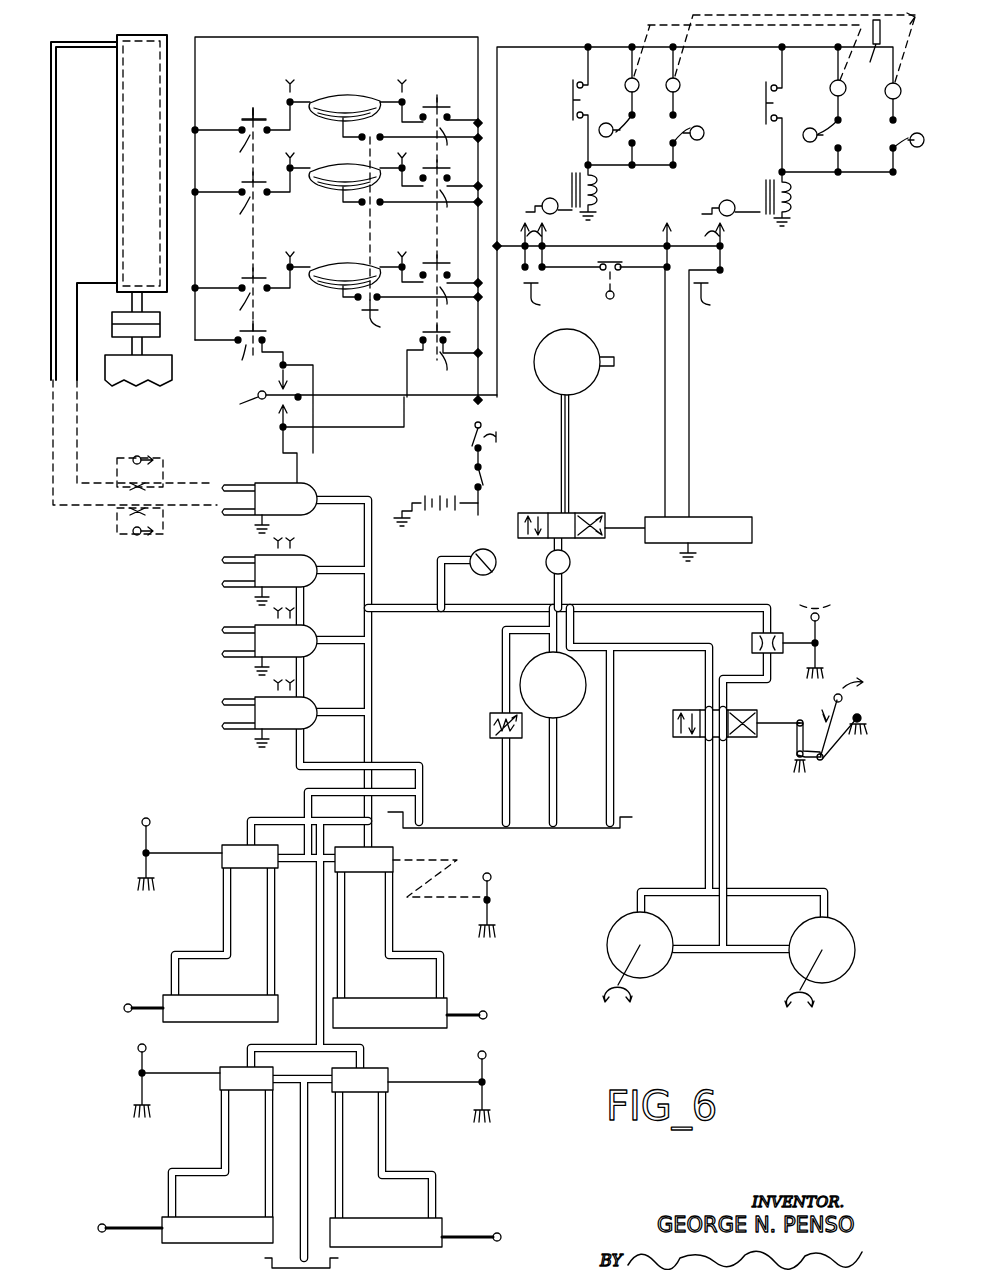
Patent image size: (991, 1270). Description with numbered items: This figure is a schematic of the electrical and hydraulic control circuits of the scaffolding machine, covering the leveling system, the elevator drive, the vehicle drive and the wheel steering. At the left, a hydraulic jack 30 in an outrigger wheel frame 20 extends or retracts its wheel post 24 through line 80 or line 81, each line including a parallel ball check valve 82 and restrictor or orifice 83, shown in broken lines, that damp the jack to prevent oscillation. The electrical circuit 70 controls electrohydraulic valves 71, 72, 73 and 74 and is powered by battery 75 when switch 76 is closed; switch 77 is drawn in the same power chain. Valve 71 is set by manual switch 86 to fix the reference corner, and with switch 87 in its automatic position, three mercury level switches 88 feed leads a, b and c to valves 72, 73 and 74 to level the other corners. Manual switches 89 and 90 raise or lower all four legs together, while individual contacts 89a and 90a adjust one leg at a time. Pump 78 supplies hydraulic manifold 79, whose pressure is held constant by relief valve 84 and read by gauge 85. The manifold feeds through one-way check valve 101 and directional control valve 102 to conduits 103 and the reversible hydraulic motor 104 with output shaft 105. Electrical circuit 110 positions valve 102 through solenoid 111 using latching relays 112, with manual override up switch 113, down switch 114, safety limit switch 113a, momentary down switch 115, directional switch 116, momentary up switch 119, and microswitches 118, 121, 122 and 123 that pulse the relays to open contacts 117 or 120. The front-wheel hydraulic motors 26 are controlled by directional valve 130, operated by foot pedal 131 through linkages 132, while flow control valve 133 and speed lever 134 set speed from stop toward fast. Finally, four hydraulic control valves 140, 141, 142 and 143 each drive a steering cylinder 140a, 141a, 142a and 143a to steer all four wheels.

The outrigger wheel frame 20 is at (112, 212).
The wheel post 24 is at (152, 318).
The hydraulic motors 26 is at (618, 918).
The hydraulic jacks 30 is at (120, 190).
The electrical circuit 70 is at (262, 40).
The electrohydraulic valve 71 is at (318, 496).
The electrohydraulic valve 72 is at (318, 563).
The electrohydraulic valve 73 is at (318, 629).
The electrohydraulic valve 74 is at (318, 699).
The battery 75 is at (418, 500).
The switch 76 is at (483, 485).
The switch 77 is at (493, 446).
The pump 78 is at (568, 715).
The hydraulic manifold 79 is at (486, 608).
The line 80 is at (95, 38).
The line 81 is at (98, 283).
The ball check valve 82 is at (140, 456).
The restrictor or orifice 83 is at (160, 482).
The relief valve 84 is at (490, 722).
The gauge 85 is at (490, 572).
The manual switch 86 is at (362, 424).
The switch 87 is at (380, 327).
The mercury level switches 88 is at (343, 97).
The manual switch 89 is at (250, 108).
The contacts 89a is at (238, 142).
The manual switch 90 is at (437, 98).
The contacts 90a is at (440, 247).
The one-way check valve 101 is at (546, 558).
The directional control valve 102 is at (580, 512).
The conduits 103 is at (573, 455).
The hydraulic motor 104 is at (590, 385).
The output shaft 105 is at (606, 356).
The electrical circuit 110 is at (605, 44).
The solenoid 111 is at (733, 517).
The latching relays 112 is at (595, 190).
The manual override up switch 113 is at (552, 296).
The safety limit switch 113a is at (606, 389).
The manual override down switch 114 is at (722, 296).
The momentary down switch 115 is at (768, 90).
The directional switch 116 is at (858, 109).
The contacts 117 is at (730, 233).
The microswitch 118 is at (840, 124).
The momentary up switch 119 is at (572, 88).
The contacts 120 is at (545, 233).
The microswitch 121 is at (615, 106).
The microswitch 122 is at (883, 127).
The microswitch 123 is at (693, 106).
The directional valve 130 is at (673, 726).
The foot pedal 131 is at (860, 714).
The linkages 132 is at (826, 752).
The flow control valve 133 is at (752, 645).
The speed lever 134 is at (826, 638).
The hydraulic control valve 140 is at (222, 846).
The hydraulic cylinder 140a is at (238, 994).
The hydraulic control valve 141 is at (395, 855).
The hydraulic cylinder 141a is at (410, 996).
The hydraulic control valve 142 is at (220, 1069).
The hydraulic cylinder 142a is at (240, 1215).
The hydraulic control valve 143 is at (390, 1072).
The hydraulic cylinder 143a is at (410, 1216).